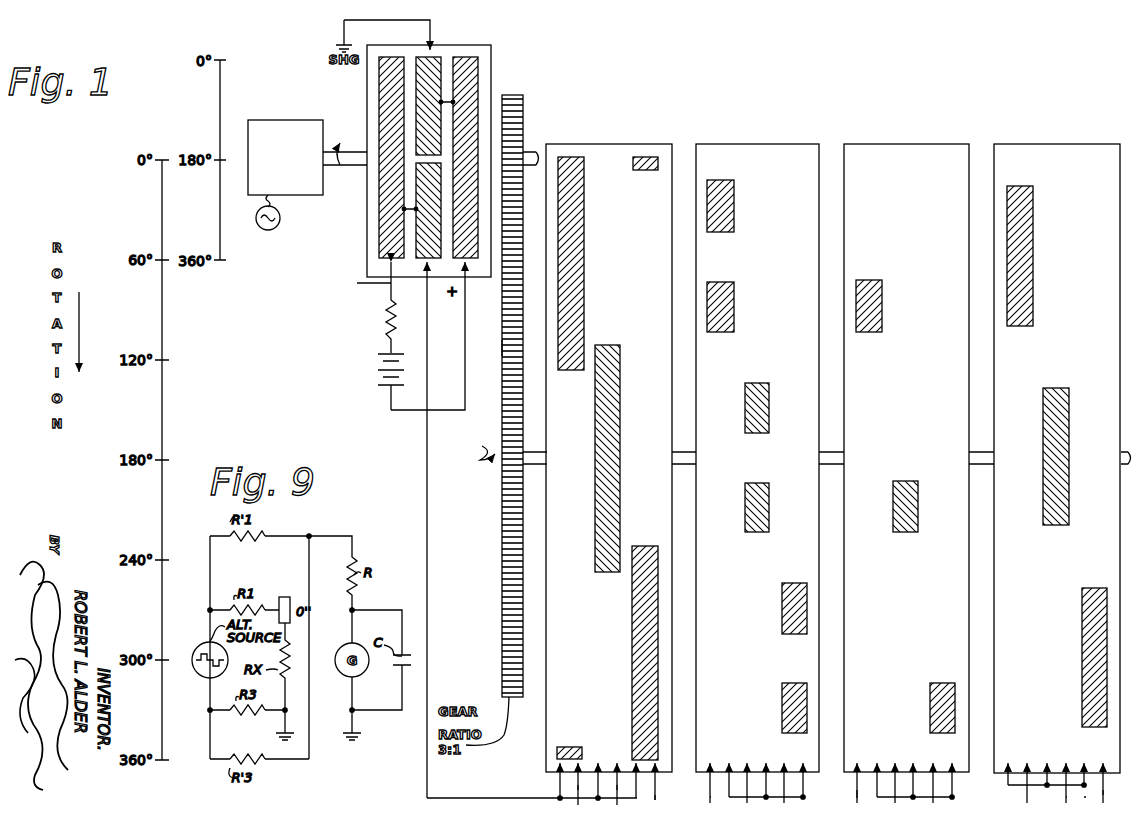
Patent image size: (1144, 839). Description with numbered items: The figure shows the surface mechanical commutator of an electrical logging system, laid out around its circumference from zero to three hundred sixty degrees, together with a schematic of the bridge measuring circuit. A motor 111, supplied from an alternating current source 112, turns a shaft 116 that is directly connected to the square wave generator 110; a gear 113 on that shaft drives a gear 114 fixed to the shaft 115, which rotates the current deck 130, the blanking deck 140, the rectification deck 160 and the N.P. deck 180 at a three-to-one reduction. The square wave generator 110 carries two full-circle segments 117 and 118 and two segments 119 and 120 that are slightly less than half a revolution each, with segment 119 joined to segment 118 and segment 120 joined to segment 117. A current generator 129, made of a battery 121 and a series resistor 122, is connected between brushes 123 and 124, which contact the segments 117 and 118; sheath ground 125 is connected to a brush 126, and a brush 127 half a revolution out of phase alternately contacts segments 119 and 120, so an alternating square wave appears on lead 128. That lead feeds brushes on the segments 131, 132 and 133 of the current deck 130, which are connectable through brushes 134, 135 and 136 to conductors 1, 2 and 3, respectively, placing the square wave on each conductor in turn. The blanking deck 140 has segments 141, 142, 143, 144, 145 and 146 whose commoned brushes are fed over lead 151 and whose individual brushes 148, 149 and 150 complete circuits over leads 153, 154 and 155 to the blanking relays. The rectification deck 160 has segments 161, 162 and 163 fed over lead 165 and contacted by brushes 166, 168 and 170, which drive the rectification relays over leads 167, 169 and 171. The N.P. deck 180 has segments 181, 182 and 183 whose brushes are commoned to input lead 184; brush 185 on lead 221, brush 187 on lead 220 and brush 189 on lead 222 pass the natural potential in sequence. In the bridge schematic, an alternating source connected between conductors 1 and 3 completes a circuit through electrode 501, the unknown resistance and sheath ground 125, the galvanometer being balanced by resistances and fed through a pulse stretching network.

In FIG. 1, the square wave generator 110 is at (491, 58).
In FIG. 1, the motor 111 is at (278, 120).
In FIG. 1, the alternating current source 112 is at (268, 230).
In FIG. 1, the gear 113 is at (524, 103).
In FIG. 1, the gear 114 is at (502, 348).
In FIG. 1, the shaft 115 is at (500, 477).
In FIG. 1, the shaft 116 is at (353, 165).
In FIG. 1, the rotating segment 117 is at (382, 93).
In FIG. 1, the rotating segment 118 is at (474, 94).
In FIG. 1, the rotating segment 119 is at (418, 65).
In FIG. 1, the rotating segment 120 is at (420, 259).
In FIG. 1, the battery 121 is at (375, 358).
In FIG. 1, the series resistor 122 is at (386, 305).
In FIG. 1, the brush 123 is at (357, 284).
In FIG. 1, the brush 124 is at (464, 306).
In FIG. 1, the sheath ground 125 is at (340, 23).
In FIG. 9, the sheath ground 125 is at (276, 736).
In FIG. 1, the brush 126 is at (426, 49).
In FIG. 1, the brush 127 is at (433, 260).
In FIG. 1, the lead 128 is at (427, 484).
In FIG. 1, the current generator 129 is at (302, 392).
In FIG. 1, the current deck 130 is at (652, 144).
In FIG. 1, the rotating segment 131 is at (640, 170).
In FIG. 1, the rotating segment 132 is at (620, 425).
In FIG. 1, the rotating segment 133 is at (584, 251).
In FIG. 1, the brush 134 is at (655, 768).
In FIG. 1, the brush 135 is at (616, 762).
In FIG. 1, the brush 136 is at (578, 757).
In FIG. 1, the blanking deck 140 is at (799, 145).
In FIG. 1, the rotating segment 141 is at (782, 692).
In FIG. 1, the rotating segment 142 is at (782, 614).
In FIG. 1, the rotating segment 143 is at (769, 512).
In FIG. 1, the rotating segment 144 is at (769, 412).
In FIG. 1, the rotating segment 145 is at (734, 311).
In FIG. 1, the rotating segment 146 is at (734, 209).
In FIG. 1, the brush 148 is at (784, 765).
In FIG. 1, the brush 149 is at (729, 766).
In FIG. 1, the brush 150 is at (708, 768).
In FIG. 1, the lead 151 is at (803, 797).
In FIG. 1, the lead 153 is at (768, 782).
In FIG. 1, the lead 154 is at (746, 783).
In FIG. 1, the lead 155 is at (710, 797).
In FIG. 1, the rectification deck 160 is at (960, 145).
In FIG. 1, the rotating segment 161 is at (930, 692).
In FIG. 1, the rotating segment 162 is at (893, 511).
In FIG. 1, the rotating segment 163 is at (882, 309).
In FIG. 1, the lead 165 is at (952, 797).
In FIG. 1, the brush 166 is at (917, 776).
In FIG. 1, the lead 167 is at (933, 765).
In FIG. 1, the brush 168 is at (895, 768).
In FIG. 1, the lead 169 is at (877, 778).
In FIG. 1, the brush 170 is at (851, 764).
In FIG. 1, the lead 171 is at (855, 790).
In FIG. 1, the N.P. deck 180 is at (1083, 145).
In FIG. 1, the rotating segment 181 is at (1082, 651).
In FIG. 1, the rotating segment 182 is at (1069, 437).
In FIG. 1, the rotating segment 183 is at (1033, 263).
In FIG. 1, the input lead 184 is at (1084, 796).
In FIG. 1, the brush 185 is at (1103, 764).
In FIG. 1, the brush 187 is at (1066, 764).
In FIG. 1, the brush 189 is at (1027, 764).
In FIG. 1, the lead 220 is at (1064, 800).
In FIG. 1, the lead 221 is at (1102, 786).
In FIG. 1, the lead 222 is at (1026, 797).
In FIG. 1, the conductor 1 is at (655, 800).
In FIG. 9, the conductor 1 is at (212, 608).
In FIG. 1, the conductor 2 is at (617, 791).
In FIG. 1, the conductor 3 is at (577, 791).
In FIG. 9, the conductor 3 is at (213, 708).
In FIG. 9, the electrode 501 is at (278, 597).